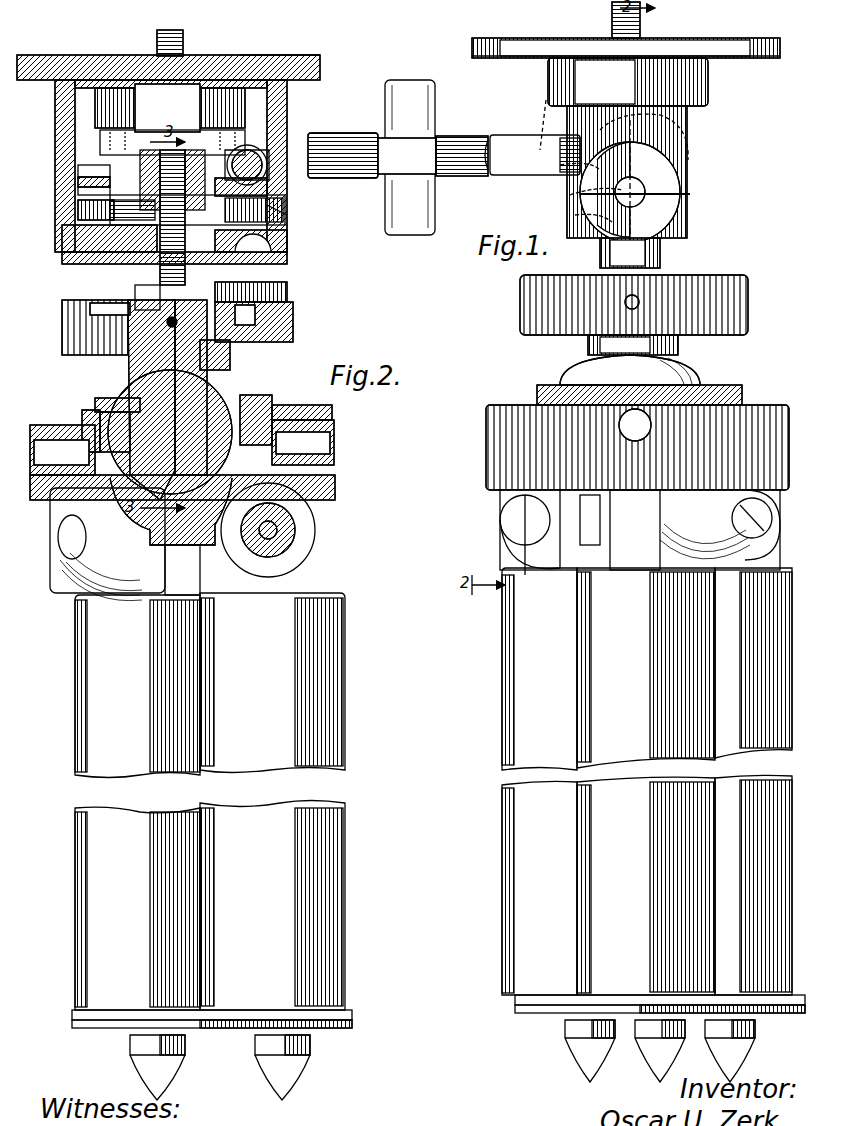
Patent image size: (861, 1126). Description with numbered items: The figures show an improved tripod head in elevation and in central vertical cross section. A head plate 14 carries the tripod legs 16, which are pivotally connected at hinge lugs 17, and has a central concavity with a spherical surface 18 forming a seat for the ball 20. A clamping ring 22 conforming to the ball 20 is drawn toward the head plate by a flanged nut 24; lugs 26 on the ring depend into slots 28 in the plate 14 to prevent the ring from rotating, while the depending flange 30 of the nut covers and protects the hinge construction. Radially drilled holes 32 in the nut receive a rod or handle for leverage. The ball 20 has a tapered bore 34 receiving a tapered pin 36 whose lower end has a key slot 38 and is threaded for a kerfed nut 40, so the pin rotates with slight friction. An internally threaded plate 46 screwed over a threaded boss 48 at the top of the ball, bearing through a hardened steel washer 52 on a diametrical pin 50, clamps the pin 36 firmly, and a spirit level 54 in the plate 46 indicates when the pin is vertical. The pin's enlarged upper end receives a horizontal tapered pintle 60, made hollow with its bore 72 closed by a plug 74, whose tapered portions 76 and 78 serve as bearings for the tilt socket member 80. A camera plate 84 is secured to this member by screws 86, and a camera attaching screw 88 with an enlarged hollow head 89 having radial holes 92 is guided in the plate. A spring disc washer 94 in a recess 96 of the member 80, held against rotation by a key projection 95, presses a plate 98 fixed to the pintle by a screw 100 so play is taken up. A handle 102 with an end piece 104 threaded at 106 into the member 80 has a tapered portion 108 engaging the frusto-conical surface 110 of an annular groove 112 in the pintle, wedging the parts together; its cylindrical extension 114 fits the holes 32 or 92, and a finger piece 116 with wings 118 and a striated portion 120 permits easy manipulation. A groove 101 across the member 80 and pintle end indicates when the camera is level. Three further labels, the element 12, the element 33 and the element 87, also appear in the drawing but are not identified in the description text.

In FIG. 2, the seat ring 12 is at (115, 412).
In FIG. 2, the plate 14 is at (148, 515).
In FIG. 2, the tripod legs 16 is at (80, 676).
In FIG. 1, the tripod legs 16 is at (520, 668).
In FIG. 2, the hinge lugs 17 is at (62, 515).
In FIG. 1, the hinge lugs 17 is at (530, 548).
In FIG. 2, the spherical surface 18 is at (270, 405).
In FIG. 2, the ball 20 is at (225, 398).
In FIG. 1, the ball 20 is at (700, 372).
In FIG. 2, the clamping ring 22 is at (98, 400).
In FIG. 2, the flanged nut 24 is at (330, 410).
In FIG. 1, the flanged nut 24 is at (760, 410).
In FIG. 2, the lugs 26 is at (84, 420).
In FIG. 2, the slots 28 is at (90, 460).
In FIG. 2, the depending flange 30 is at (335, 484).
In FIG. 1, the radially drilled holes 32 is at (635, 425).
In FIG. 2, the side block 33 is at (333, 448).
In FIG. 2, the tapered bore 34 is at (207, 378).
In FIG. 2, the tapered pin 36 is at (232, 356).
In FIG. 1, the tapered pin 36 is at (662, 255).
In FIG. 2, the key slot 38 is at (130, 380).
In FIG. 2, the kerfed nut 40 is at (218, 500).
In FIG. 2, the internally threaded plate 46 is at (293, 315).
In FIG. 1, the internally threaded plate 46 is at (748, 310).
In FIG. 2, the threaded boss 48 is at (62, 340).
In FIG. 1, the threaded boss 48 is at (678, 345).
In FIG. 2, the pin 50 is at (145, 300).
In FIG. 2, the hardened steel washer 52 is at (287, 250).
In FIG. 2, the spirit level 54 is at (290, 290).
In FIG. 1, the spirit level 54 is at (638, 298).
In FIG. 2, the pintle 60 is at (285, 190).
In FIG. 1, the pintle 60 is at (660, 213).
In FIG. 2, the bore 72 is at (197, 210).
In FIG. 2, the plug 74 is at (287, 212).
In FIG. 1, the plug 74 is at (640, 190).
In FIG. 2, the tapered portion 76 is at (263, 165).
In FIG. 2, the tapered portion 78 is at (70, 262).
In FIG. 2, the tilt socket member 80 is at (62, 150).
In FIG. 1, the tilt socket member 80 is at (688, 112).
In FIG. 2, the camera plate 84 is at (300, 60).
In FIG. 1, the camera plate 84 is at (740, 57).
In FIG. 2, the screws 86 is at (272, 56).
In FIG. 1, the collar 87 is at (708, 88).
In FIG. 2, the camera attaching screw 88 is at (183, 40).
In FIG. 2, the enlarged hollow head 89 is at (172, 142).
In FIG. 2, the radially drilled holes 92 is at (98, 97).
In FIG. 2, the spring disc washer 94 is at (64, 240).
In FIG. 2, the key projection 95 is at (78, 192).
In FIG. 2, the recess 96 is at (78, 170).
In FIG. 2, the plate 98 is at (78, 182).
In FIG. 2, the screw 100 is at (78, 212).
In FIG. 1, the groove 101 is at (576, 208).
In FIG. 1, the handle 102 is at (520, 135).
In FIG. 1, the end piece 104 is at (546, 100).
In FIG. 1, the threaded portion 106 is at (575, 175).
In FIG. 2, the tapered portion 108 is at (258, 152).
In FIG. 1, the tapered portion 108 is at (580, 196).
In FIG. 2, the frusto-conical surface 110 is at (186, 205).
In FIG. 2, the annular groove 112 is at (262, 160).
In FIG. 1, the cylindrical extension 114 is at (690, 148).
In FIG. 1, the finger piece 116 is at (452, 135).
In FIG. 1, the wings 118 is at (425, 108).
In FIG. 1, the striated portion 120 is at (358, 133).